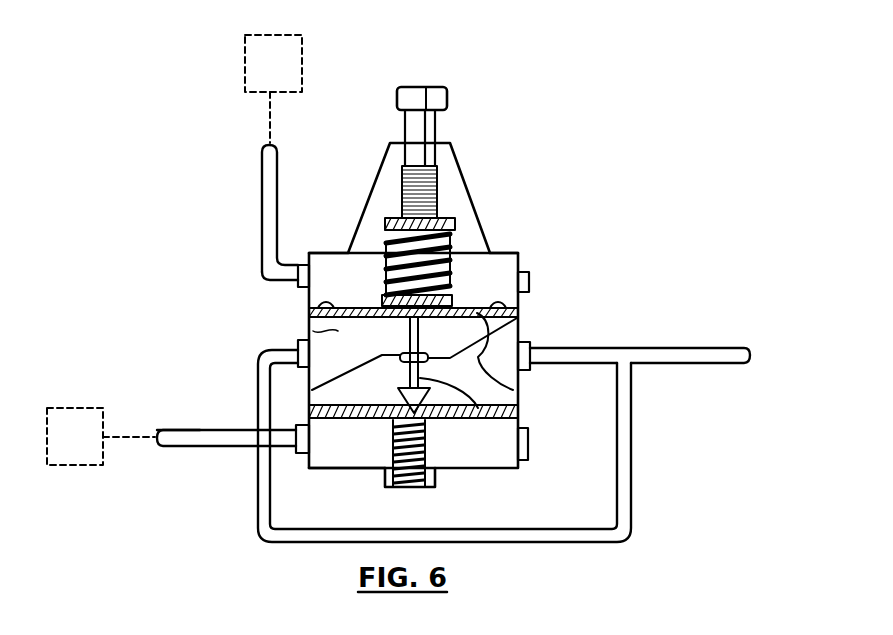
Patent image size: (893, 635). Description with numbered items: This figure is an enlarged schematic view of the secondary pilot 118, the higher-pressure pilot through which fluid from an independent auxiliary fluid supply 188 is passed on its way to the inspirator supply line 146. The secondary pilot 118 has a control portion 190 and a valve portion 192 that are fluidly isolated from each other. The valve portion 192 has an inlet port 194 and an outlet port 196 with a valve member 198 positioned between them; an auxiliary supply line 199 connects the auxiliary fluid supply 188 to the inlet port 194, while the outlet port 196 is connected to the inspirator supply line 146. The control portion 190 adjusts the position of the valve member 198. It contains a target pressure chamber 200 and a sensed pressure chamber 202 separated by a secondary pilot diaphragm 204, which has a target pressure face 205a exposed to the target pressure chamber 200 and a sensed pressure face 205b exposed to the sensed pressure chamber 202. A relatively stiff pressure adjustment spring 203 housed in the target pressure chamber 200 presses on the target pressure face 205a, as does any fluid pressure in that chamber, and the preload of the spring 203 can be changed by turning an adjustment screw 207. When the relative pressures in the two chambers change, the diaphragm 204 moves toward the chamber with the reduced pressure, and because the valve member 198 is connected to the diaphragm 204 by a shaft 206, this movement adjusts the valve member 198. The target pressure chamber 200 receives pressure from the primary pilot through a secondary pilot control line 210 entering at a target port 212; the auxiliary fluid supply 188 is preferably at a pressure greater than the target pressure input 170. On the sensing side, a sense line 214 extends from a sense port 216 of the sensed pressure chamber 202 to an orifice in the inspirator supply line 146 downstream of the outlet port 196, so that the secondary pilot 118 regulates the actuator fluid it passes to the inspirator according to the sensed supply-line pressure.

The secondary pilot 118 is at (611, 173).
The inspirator supply line 146 is at (705, 347).
The target pressure input 170 is at (255, 68).
The auxiliary fluid supply 188 is at (73, 408).
The control portion 190 is at (206, 145).
The valve portion 192 is at (237, 380).
The inlet port 194 is at (303, 470).
The outlet port 196 is at (532, 346).
The valve member 198 is at (434, 428).
The auxiliary supply line 199 is at (172, 448).
The target pressure chamber 200 is at (330, 253).
The sensed pressure chamber 202 is at (309, 330).
The pressure adjustment spring 203 is at (459, 245).
The secondary pilot diaphragm 204 is at (520, 310).
The target pressure face 205a is at (504, 303).
The sensed pressure face 205b is at (516, 385).
The shaft 206 is at (528, 441).
The adjustment screw 207 is at (437, 128).
The secondary pilot control line 210 is at (279, 160).
The target port 212 is at (300, 285).
The sense line 214 is at (584, 534).
The sense port 216 is at (300, 343).